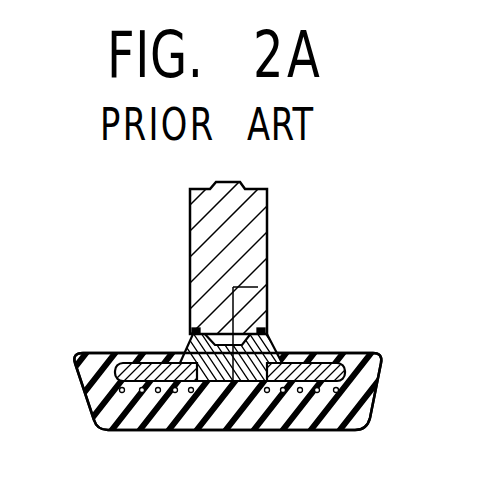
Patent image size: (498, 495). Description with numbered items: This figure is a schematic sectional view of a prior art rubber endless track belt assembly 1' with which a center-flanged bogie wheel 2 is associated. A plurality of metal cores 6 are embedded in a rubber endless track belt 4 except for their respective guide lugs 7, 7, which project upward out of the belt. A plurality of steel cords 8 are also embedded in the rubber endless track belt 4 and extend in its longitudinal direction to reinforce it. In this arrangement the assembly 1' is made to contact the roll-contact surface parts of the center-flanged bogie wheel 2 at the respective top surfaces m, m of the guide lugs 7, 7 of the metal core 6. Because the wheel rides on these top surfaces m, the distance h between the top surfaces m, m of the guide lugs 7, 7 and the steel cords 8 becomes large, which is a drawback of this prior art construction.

The rubber endless track belt assembly 1' is at (243, 362).
The center-flanged bogie wheel 2 is at (260, 248).
The rubber endless track belt 4 is at (114, 362).
The metal core 6 is at (233, 382).
The guide lug 7 is at (192, 355).
The steel cord 8 is at (338, 390).
The distance between guide lug top surfaces and steel cords h is at (245, 295).
The top surface of guide lug m is at (205, 344).